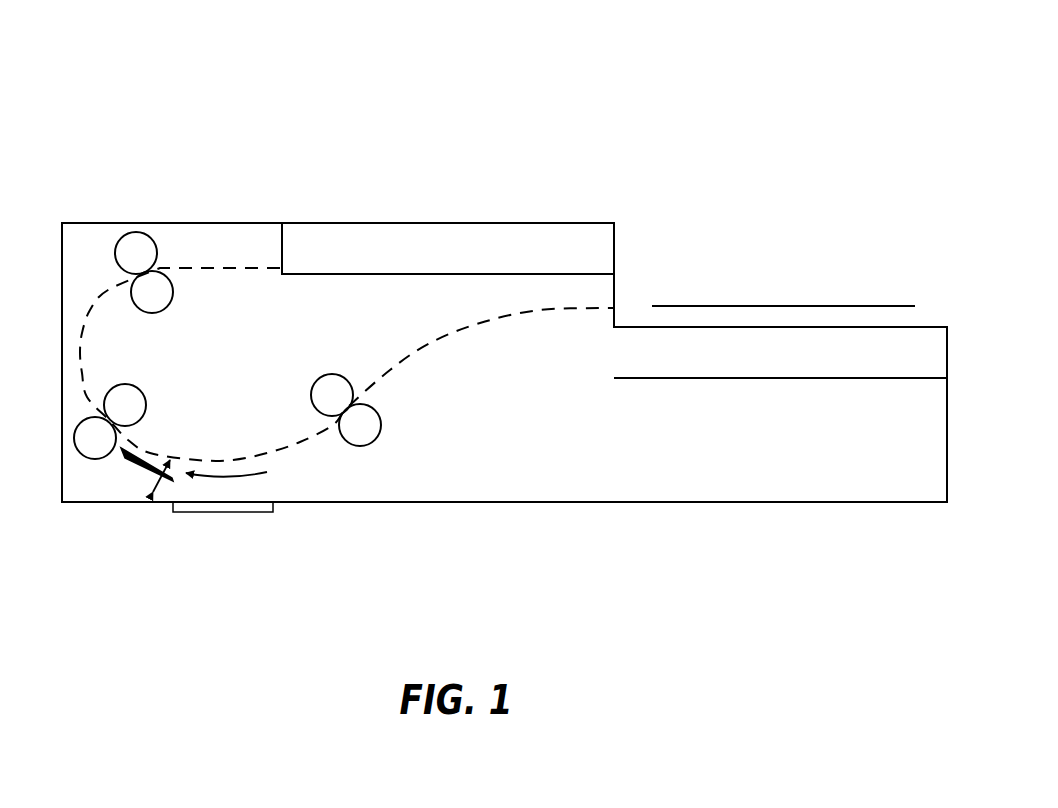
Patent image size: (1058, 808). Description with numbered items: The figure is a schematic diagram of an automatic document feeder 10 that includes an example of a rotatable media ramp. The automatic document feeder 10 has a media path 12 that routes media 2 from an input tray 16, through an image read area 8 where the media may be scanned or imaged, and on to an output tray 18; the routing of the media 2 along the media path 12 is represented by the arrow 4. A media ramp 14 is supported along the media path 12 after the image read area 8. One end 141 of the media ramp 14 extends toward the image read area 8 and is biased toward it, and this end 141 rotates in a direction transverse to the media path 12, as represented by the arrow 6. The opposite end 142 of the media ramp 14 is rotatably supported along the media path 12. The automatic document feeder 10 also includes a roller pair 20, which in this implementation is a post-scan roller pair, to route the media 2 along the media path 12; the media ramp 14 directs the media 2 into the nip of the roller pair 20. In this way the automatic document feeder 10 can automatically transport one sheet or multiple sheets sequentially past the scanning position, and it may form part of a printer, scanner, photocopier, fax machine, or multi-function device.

The automatic document feeder 10 is at (872, 95).
The media path 12 is at (297, 445).
The output tray 18 is at (555, 222).
The input tray 16 is at (933, 326).
The media 2 is at (795, 307).
The roller pair 20 is at (153, 389).
The arrow 4 is at (217, 473).
The media ramp 14 is at (140, 460).
The opposite end 142 is at (122, 453).
The end 141 is at (173, 485).
The arrow 6 is at (157, 486).
The image read area 8 is at (217, 510).